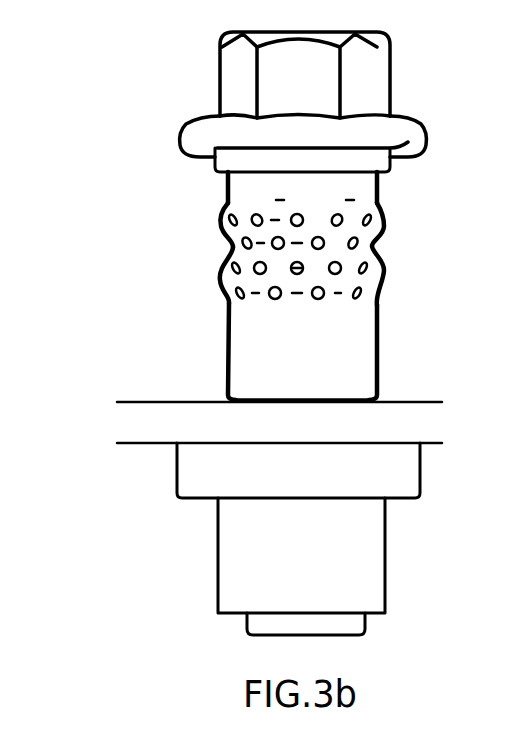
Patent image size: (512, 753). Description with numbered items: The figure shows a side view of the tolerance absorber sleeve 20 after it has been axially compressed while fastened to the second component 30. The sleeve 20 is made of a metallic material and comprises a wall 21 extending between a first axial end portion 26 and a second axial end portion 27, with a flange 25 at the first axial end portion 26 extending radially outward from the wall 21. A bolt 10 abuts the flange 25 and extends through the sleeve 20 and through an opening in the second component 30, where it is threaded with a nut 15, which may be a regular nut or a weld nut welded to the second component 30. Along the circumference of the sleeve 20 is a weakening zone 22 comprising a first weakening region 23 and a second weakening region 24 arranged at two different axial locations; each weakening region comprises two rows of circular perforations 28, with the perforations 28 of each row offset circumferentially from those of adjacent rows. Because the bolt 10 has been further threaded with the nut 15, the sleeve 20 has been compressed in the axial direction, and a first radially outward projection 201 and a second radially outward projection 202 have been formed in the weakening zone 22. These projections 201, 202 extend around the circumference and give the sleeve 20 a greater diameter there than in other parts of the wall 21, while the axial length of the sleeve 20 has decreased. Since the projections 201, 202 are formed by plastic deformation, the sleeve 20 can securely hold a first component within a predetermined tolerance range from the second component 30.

The bolt 10 is at (217, 50).
The nut 15 is at (217, 583).
The tolerance absorber sleeve 20 is at (296, 288).
The wall 21 is at (378, 178).
The weakening zone 22 is at (205, 207).
The first weakening region 23 is at (213, 232).
The second weakening region 24 is at (214, 301).
The flange 25 is at (208, 172).
The first axial end portion 26 is at (337, 157).
The second axial end portion 27 is at (333, 404).
The circular perforations 28 is at (228, 341).
The second component 30 is at (160, 443).
The first radially outward projection 201 is at (385, 236).
The second radially outward projection 202 is at (383, 278).